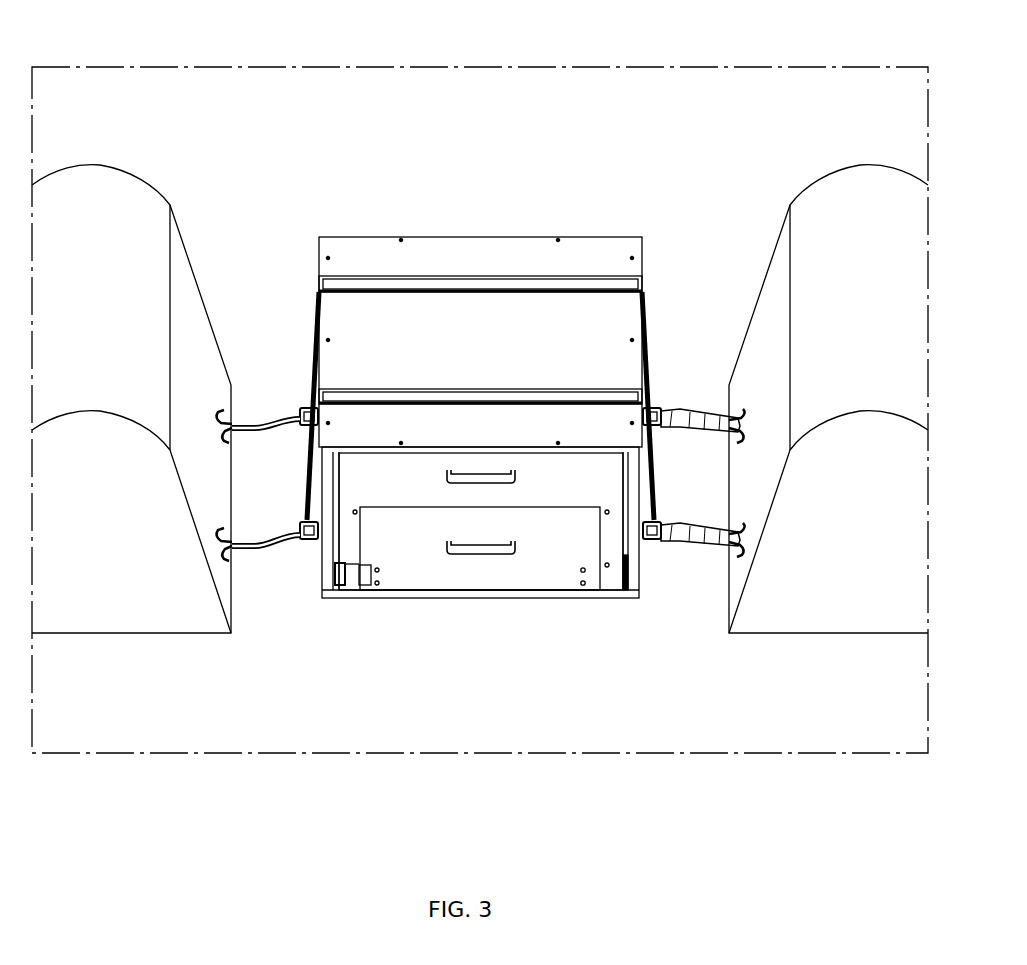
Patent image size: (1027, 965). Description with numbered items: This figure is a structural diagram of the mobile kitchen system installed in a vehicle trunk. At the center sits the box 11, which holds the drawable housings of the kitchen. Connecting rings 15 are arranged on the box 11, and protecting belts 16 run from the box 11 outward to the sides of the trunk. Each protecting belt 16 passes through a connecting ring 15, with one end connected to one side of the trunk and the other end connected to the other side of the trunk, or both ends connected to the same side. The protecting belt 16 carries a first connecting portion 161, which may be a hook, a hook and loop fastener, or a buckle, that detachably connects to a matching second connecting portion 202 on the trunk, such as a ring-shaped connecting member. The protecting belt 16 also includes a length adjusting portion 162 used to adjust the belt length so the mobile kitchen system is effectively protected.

The box 11 is at (497, 237).
The connecting ring 15 is at (300, 412).
The protecting belt 16 is at (548, 290).
The first connecting portion 161 is at (255, 550).
The length adjusting portion 162 is at (686, 543).
The second connecting portion 202 is at (233, 562).